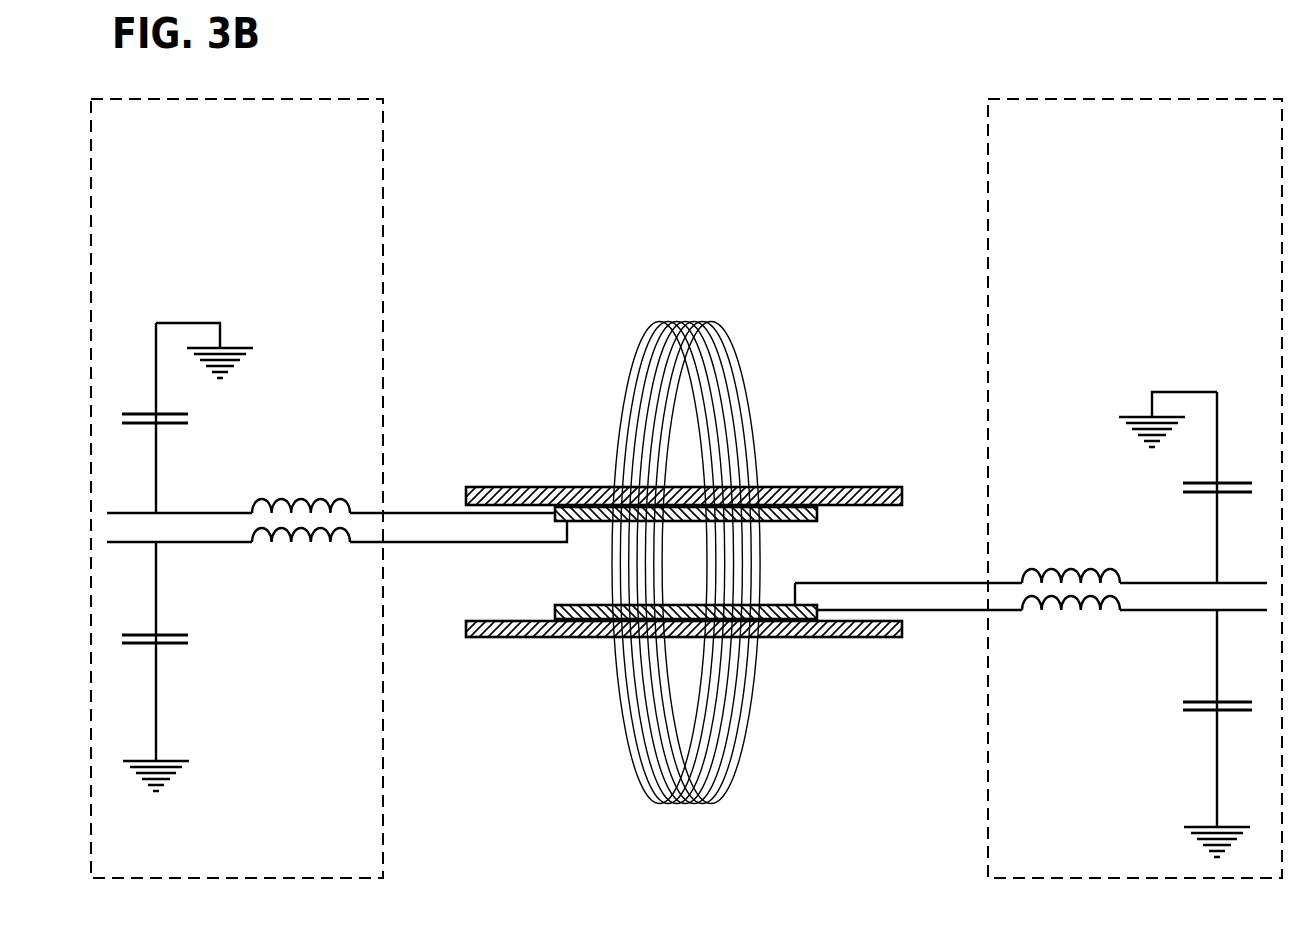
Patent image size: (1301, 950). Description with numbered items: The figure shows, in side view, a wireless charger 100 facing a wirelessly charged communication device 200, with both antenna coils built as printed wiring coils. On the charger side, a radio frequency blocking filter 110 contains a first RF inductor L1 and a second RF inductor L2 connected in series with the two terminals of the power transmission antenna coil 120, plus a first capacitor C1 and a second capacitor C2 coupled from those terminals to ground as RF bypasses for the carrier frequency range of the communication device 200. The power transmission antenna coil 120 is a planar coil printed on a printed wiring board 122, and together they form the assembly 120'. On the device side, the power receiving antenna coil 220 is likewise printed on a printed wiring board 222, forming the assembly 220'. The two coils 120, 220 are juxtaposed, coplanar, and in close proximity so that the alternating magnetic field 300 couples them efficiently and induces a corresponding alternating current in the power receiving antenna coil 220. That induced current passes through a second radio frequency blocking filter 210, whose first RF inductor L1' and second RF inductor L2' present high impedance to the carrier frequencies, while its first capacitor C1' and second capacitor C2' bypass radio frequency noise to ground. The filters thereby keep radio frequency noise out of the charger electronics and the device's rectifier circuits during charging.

The wireless charger 100 is at (485, 88).
The radio frequency blocking filter 110 is at (329, 488).
The power transmission antenna coil assembly 120' is at (683, 397).
The power transmission antenna coil 120 is at (752, 526).
The printed wiring board 122 is at (863, 472).
The wirelessly charged communication device 200 is at (910, 125).
The radio frequency blocking filter 210 is at (1038, 488).
The power receiving antenna coil assembly 220' is at (697, 714).
The power receiving antenna coil 220 is at (616, 596).
The printed wiring board 222 is at (502, 655).
The magnetic field 300 is at (707, 310).
The first capacitor C1 is at (153, 402).
The second capacitor C2 is at (153, 658).
The first RF inductor L1 is at (301, 488).
The second RF inductor L2 is at (301, 555).
The first capacitor C1' is at (1224, 470).
The second capacitor C2' is at (1224, 724).
The first RF inductor L1' is at (1071, 557).
The second RF inductor L2' is at (1071, 621).